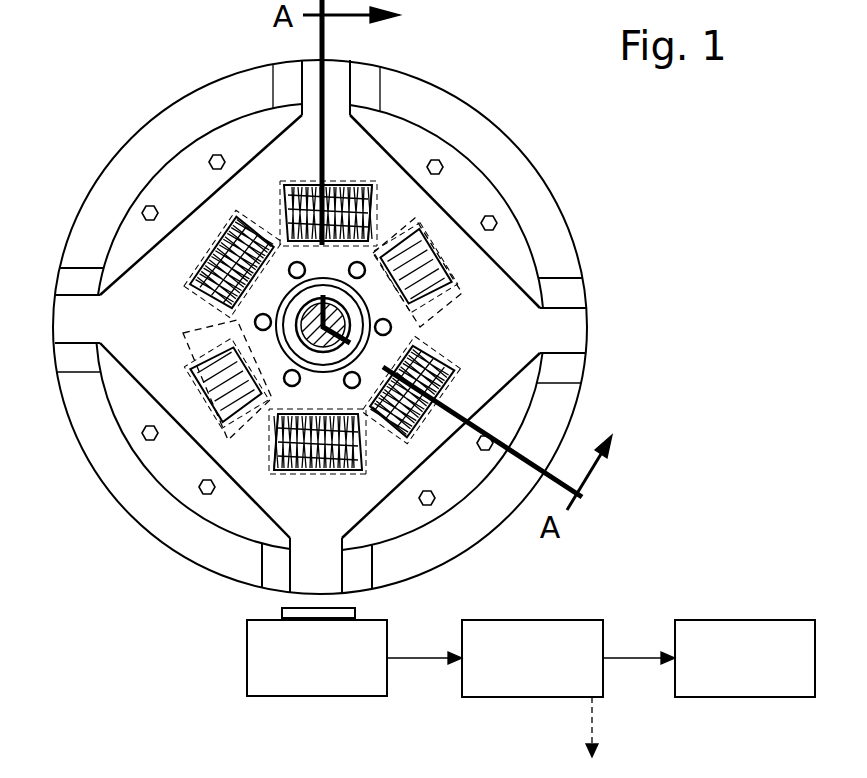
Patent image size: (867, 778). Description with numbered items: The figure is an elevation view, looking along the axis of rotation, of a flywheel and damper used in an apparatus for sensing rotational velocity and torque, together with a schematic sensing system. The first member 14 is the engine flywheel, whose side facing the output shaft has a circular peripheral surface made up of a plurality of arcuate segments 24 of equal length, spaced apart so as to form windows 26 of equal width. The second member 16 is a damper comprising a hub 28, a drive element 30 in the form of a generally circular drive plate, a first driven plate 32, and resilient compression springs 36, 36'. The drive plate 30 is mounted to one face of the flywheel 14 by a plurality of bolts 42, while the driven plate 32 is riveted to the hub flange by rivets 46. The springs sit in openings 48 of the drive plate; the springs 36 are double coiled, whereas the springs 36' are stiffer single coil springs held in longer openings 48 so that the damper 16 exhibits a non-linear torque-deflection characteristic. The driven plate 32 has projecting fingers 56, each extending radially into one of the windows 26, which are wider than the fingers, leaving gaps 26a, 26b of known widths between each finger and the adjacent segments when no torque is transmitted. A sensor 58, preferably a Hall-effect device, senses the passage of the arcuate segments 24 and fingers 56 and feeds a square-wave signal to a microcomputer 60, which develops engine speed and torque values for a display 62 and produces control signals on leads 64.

The first member 14 is at (118, 140).
The second member 16 is at (144, 406).
The arcuate segments 24 is at (152, 507).
The windows 26 is at (82, 285).
The gap 26a is at (278, 575).
The gap 26b is at (355, 575).
The hub 28 is at (360, 317).
The drive element 30 is at (470, 185).
The first driven plate 32 is at (486, 260).
The compression springs 36 is at (322, 322).
The compression springs 36' is at (322, 326).
The bolts 42 is at (207, 497).
The rivets 46 is at (291, 275).
The openings 48 is at (205, 323).
The fingers 56 is at (73, 323).
The sensor 58 is at (383, 697).
The microcomputer 60 is at (480, 698).
The display 62 is at (712, 697).
The leads 64 is at (607, 735).